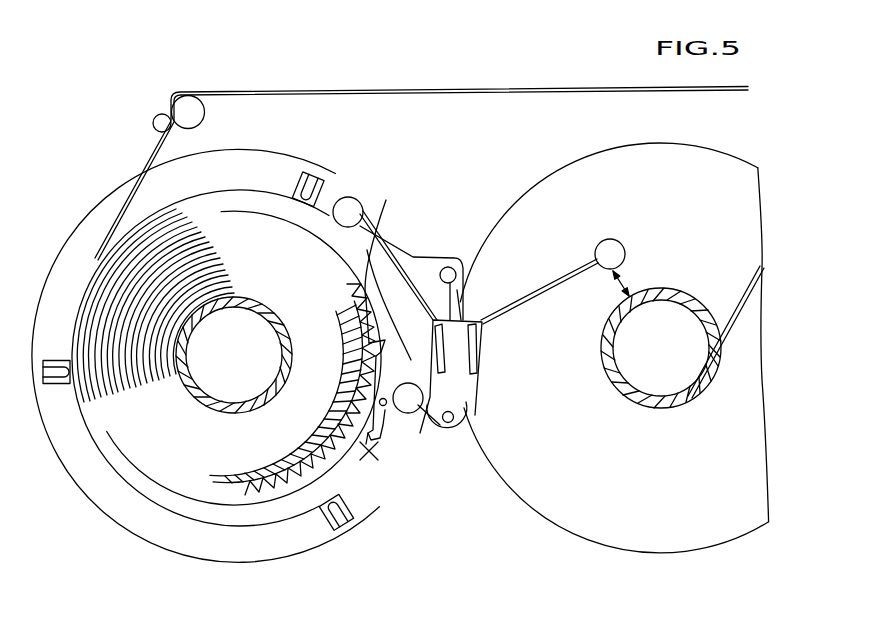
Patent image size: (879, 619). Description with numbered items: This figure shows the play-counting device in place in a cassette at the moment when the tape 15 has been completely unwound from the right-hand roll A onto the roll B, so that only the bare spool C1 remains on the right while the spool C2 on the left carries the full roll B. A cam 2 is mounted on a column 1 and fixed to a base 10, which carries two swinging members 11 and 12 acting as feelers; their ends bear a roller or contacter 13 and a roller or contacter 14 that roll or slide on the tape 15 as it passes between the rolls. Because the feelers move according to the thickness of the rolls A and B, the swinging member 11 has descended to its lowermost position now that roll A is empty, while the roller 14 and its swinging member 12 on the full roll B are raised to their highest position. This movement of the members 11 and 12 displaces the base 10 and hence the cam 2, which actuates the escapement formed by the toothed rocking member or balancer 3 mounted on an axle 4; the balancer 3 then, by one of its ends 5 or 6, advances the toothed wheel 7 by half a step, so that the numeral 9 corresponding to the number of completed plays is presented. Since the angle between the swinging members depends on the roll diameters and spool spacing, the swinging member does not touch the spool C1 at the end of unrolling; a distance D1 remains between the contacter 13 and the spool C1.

The column 1 is at (455, 427).
The cam 2 is at (418, 410).
The toothed rocking member or balancer 3 is at (384, 440).
The axle 4 is at (386, 405).
The end of balancer 5 is at (380, 345).
The end of balancer 6 is at (368, 442).
The toothed wheel 7 is at (388, 272).
The numeral 9 is at (283, 466).
The base 10 is at (462, 368).
The swinging member 11 is at (528, 294).
The swinging member 12 is at (380, 240).
The roller or contacter 13 is at (608, 248).
The roller or contacter 14 is at (352, 206).
The tape 15 is at (403, 90).
The roll A is at (667, 290).
The roll B is at (129, 284).
The spool C1 is at (657, 408).
The spool C2 is at (222, 401).
The distance D1 is at (612, 288).